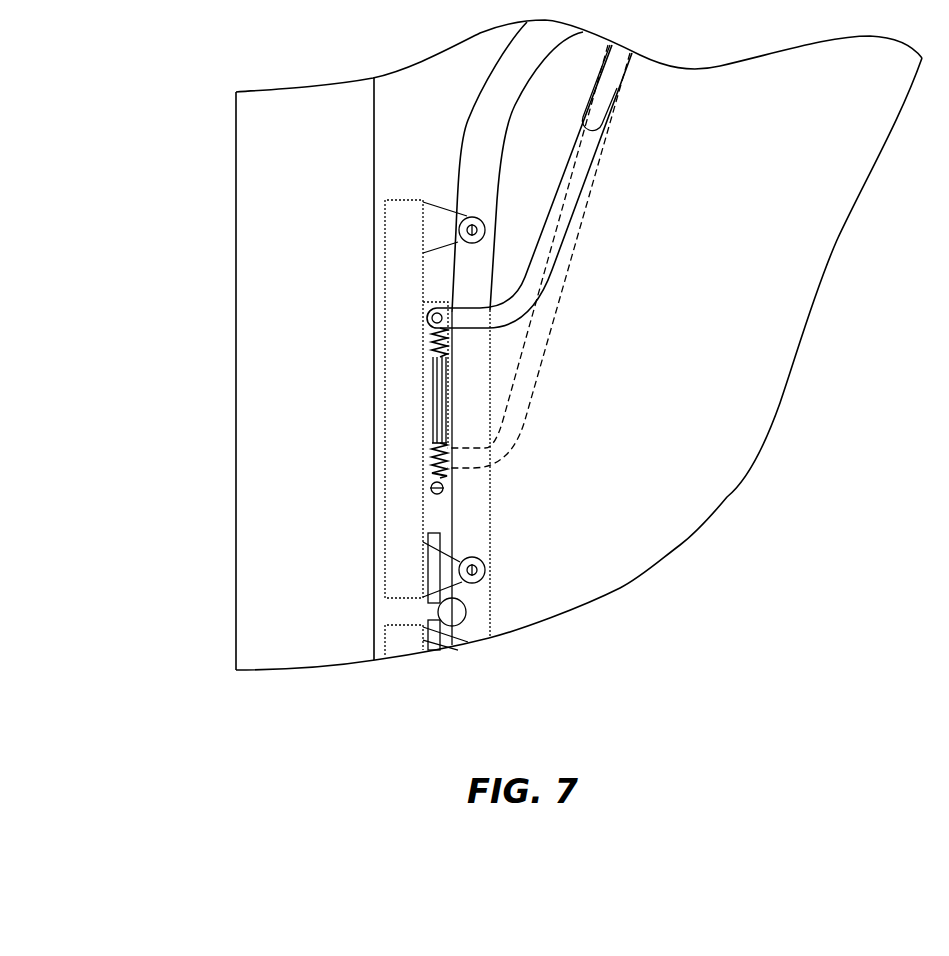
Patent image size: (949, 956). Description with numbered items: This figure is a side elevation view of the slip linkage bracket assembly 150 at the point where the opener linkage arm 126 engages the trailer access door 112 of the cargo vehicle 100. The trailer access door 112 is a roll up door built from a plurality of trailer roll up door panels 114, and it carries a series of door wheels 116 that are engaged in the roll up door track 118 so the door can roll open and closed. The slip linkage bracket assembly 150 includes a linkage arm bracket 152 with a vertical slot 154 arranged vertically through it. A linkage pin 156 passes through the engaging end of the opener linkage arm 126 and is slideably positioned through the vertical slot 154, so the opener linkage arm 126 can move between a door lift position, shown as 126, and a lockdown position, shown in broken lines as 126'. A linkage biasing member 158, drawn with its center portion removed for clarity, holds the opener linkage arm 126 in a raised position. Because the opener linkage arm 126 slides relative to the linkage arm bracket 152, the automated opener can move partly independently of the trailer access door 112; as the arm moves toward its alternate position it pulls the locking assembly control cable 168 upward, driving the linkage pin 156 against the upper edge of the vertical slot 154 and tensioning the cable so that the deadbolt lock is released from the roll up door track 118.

The cargo vehicle 100 is at (812, 541).
The trailer access door 112 is at (237, 308).
The trailer roll up door panels 114 is at (385, 470).
The door wheels 116 is at (487, 570).
The roll up door track 118 is at (475, 98).
The opener linkage arm 126 is at (543, 186).
The opener linkage arm lockdown position 126' is at (538, 256).
The slip linkage bracket assembly 150 is at (414, 427).
The linkage arm bracket 152 is at (430, 335).
The vertical slot 154 is at (428, 372).
The linkage pin 156 is at (433, 317).
The linkage biasing member 158 is at (446, 470).
The locking assembly control cable 168 is at (446, 441).